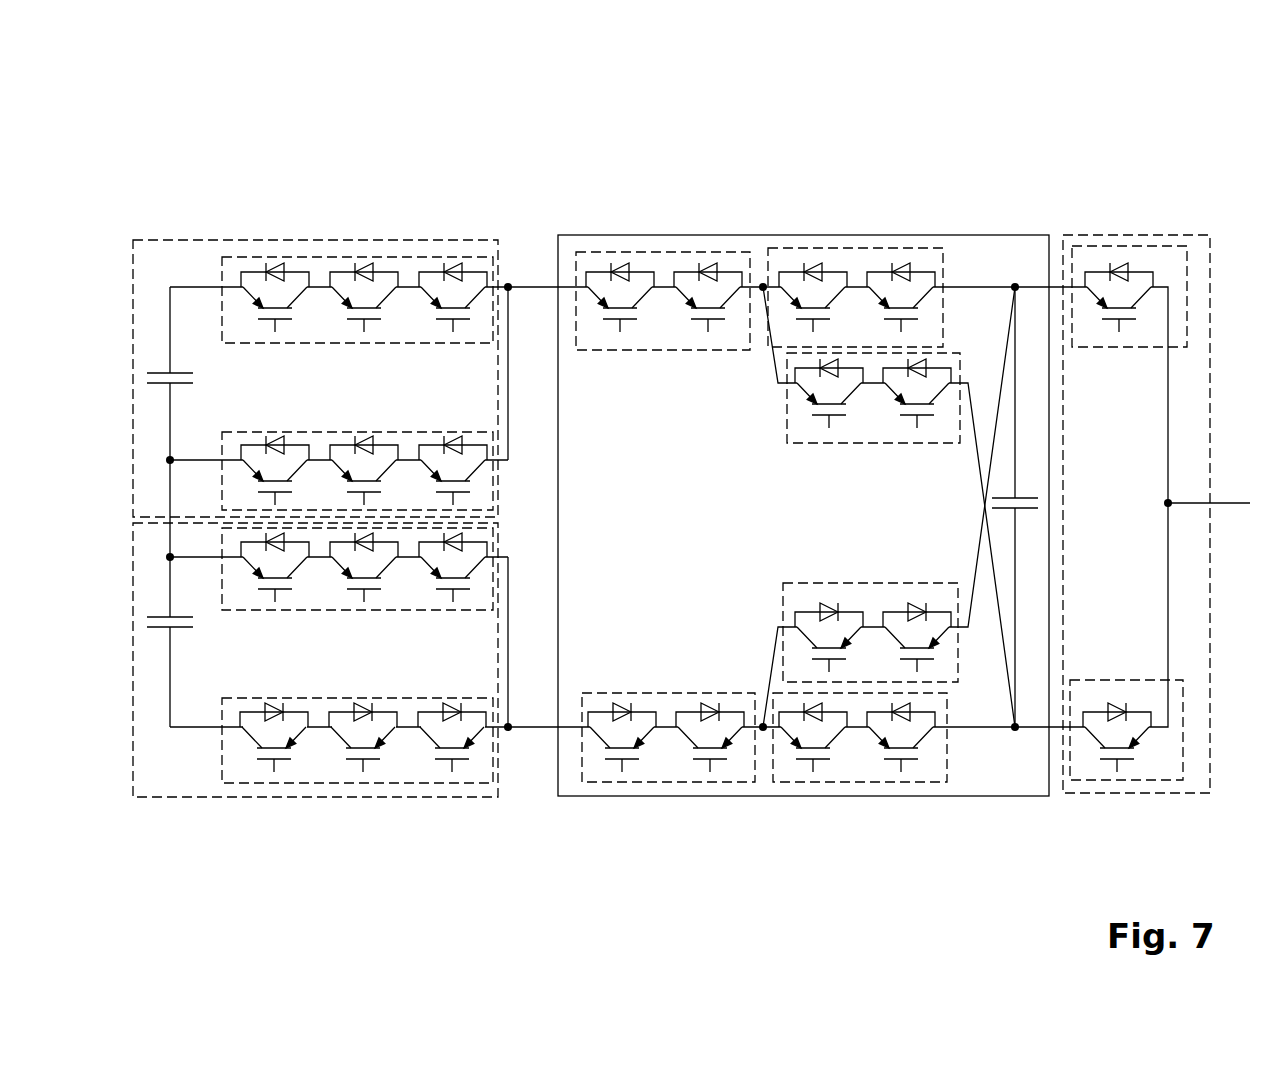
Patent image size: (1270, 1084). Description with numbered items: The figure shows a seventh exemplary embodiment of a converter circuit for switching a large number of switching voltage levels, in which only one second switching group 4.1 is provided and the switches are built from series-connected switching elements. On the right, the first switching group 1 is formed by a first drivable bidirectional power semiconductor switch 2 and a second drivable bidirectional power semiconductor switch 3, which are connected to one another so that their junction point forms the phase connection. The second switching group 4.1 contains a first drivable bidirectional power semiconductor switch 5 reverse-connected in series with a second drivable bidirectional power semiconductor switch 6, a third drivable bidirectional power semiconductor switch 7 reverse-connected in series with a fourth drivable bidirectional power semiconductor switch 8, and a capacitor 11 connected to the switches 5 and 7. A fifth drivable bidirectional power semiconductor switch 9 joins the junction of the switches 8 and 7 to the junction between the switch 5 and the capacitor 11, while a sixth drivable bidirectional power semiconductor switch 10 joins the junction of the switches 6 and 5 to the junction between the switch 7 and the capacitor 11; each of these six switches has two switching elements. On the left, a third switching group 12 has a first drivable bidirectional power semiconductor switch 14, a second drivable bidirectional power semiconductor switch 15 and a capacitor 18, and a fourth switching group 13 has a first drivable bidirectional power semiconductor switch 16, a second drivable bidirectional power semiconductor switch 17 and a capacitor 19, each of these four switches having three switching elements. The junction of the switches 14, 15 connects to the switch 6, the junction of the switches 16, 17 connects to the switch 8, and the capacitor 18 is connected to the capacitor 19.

The first switching group 1 is at (1132, 235).
The first drivable bidirectional power semiconductor switch 2 is at (1083, 246).
The second drivable bidirectional power semiconductor switch 3 is at (1097, 782).
The second switching group 4.1 is at (935, 235).
The first drivable bidirectional power semiconductor switch 5 is at (812, 248).
The second drivable bidirectional power semiconductor switch 6 is at (663, 252).
The third drivable bidirectional power semiconductor switch 7 is at (885, 785).
The fourth drivable bidirectional power semiconductor switch 8 is at (653, 785).
The fifth drivable bidirectional power semiconductor switch 9 is at (953, 682).
The sixth drivable bidirectional power semiconductor switch 10 is at (837, 353).
The capacitor 11 is at (1029, 498).
The third switching group 12 is at (452, 240).
The fourth switching group 13 is at (332, 797).
The first drivable bidirectional power semiconductor switch 14 is at (367, 257).
The second drivable bidirectional power semiconductor switch 15 is at (270, 432).
The first drivable bidirectional power semiconductor switch 16 is at (420, 783).
The second drivable bidirectional power semiconductor switch 17 is at (425, 610).
The capacitor 18 is at (180, 373).
The capacitor 19 is at (178, 627).